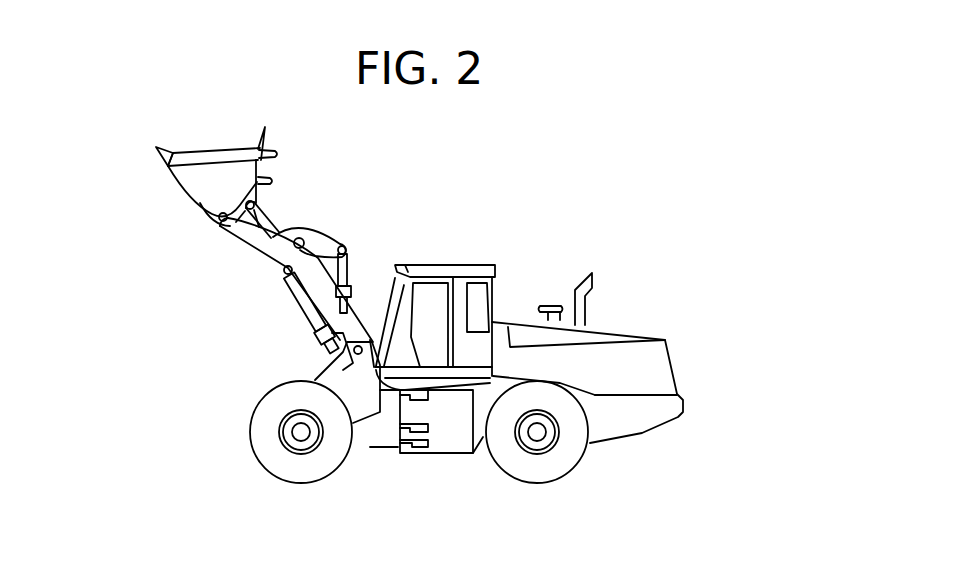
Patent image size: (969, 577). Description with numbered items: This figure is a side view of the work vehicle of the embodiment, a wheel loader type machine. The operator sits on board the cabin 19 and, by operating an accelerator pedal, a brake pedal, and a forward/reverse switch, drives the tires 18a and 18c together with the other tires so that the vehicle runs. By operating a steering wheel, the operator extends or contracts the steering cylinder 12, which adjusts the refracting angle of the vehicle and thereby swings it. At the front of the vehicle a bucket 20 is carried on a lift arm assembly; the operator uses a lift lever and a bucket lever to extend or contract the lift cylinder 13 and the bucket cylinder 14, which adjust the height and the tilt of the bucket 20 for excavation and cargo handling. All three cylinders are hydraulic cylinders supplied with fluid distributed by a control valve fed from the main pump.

The steering cylinder 12 is at (404, 430).
The lift cylinder 13 is at (300, 314).
The bucket cylinder 14 is at (349, 262).
The tire 18a is at (265, 452).
The tire 18c is at (565, 460).
The cabin 19 is at (467, 266).
The bucket 20 is at (200, 189).